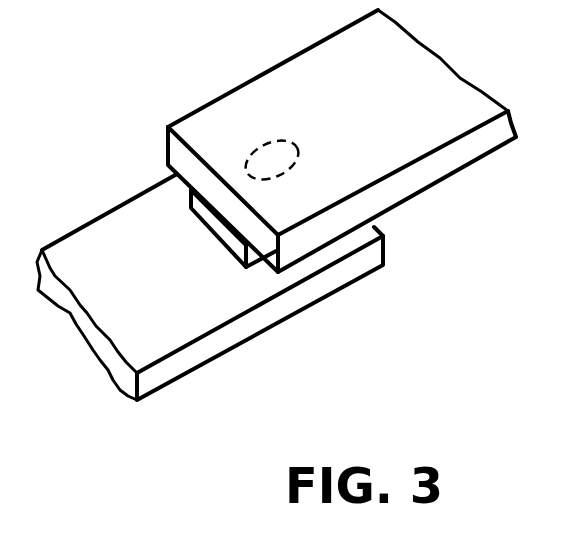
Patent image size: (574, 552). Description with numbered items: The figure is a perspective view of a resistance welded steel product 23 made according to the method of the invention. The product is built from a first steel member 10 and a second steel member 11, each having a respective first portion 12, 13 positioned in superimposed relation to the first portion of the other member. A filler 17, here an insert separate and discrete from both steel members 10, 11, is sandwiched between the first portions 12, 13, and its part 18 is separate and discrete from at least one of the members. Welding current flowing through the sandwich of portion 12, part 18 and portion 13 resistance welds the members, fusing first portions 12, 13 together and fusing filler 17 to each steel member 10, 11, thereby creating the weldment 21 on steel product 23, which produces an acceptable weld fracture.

The first steel member 10 is at (354, 140).
The second steel member 11 is at (212, 308).
The first portion of first steel member 12 is at (292, 198).
The first portion of second steel member 13 is at (300, 271).
The filler 17 is at (200, 195).
The part of filler 18 is at (159, 204).
The weldment 21 is at (280, 140).
The resistance welded steel product 23 is at (395, 228).